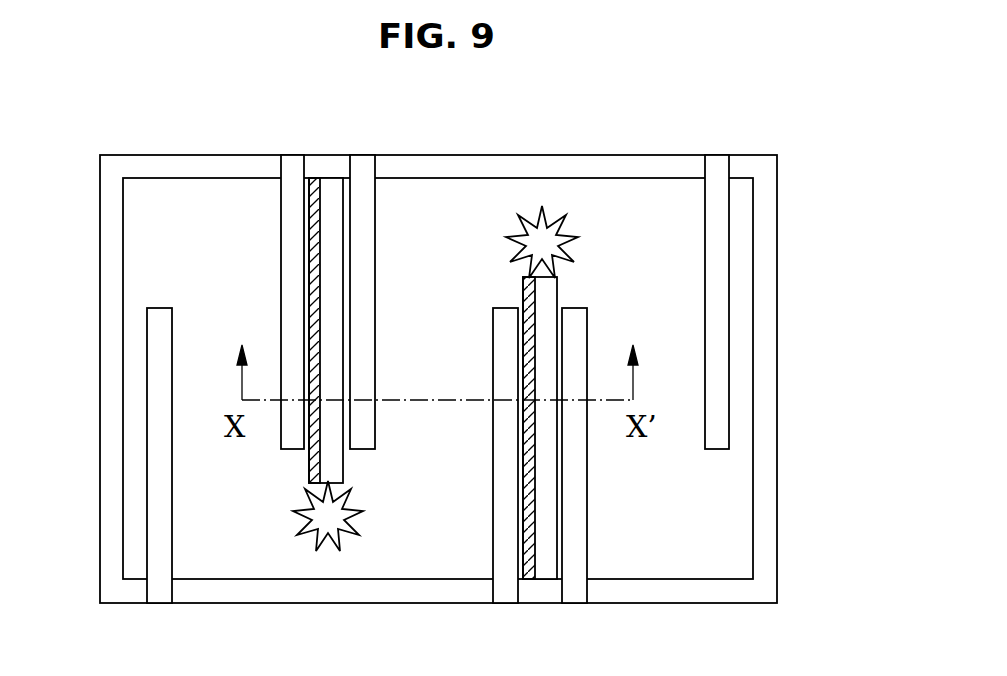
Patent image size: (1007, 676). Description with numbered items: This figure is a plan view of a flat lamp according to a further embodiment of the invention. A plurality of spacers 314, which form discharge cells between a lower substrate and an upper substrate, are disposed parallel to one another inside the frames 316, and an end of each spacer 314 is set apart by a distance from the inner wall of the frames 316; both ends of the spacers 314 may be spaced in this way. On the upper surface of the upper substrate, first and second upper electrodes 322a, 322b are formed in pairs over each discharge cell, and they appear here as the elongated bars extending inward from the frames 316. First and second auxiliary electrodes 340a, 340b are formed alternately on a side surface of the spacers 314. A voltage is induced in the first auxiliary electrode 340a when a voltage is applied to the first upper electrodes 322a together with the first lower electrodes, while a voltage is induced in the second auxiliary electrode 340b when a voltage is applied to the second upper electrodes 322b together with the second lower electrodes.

The spacer 314 is at (334, 200).
The frame 316 is at (105, 372).
The first upper electrode 322a is at (295, 163).
The second upper electrode 322b is at (157, 600).
The first auxiliary electrode 340a is at (310, 485).
The second auxiliary electrode 340b is at (523, 277).